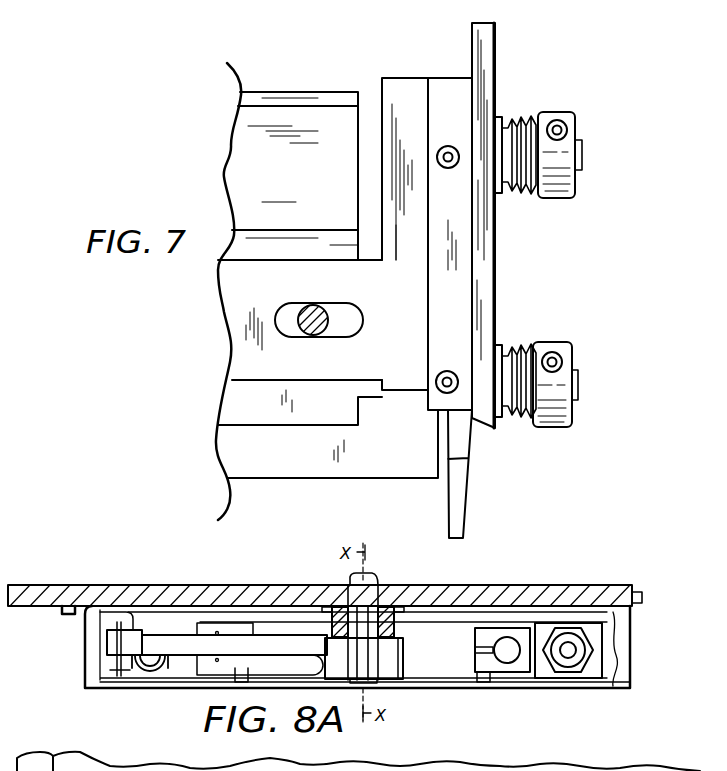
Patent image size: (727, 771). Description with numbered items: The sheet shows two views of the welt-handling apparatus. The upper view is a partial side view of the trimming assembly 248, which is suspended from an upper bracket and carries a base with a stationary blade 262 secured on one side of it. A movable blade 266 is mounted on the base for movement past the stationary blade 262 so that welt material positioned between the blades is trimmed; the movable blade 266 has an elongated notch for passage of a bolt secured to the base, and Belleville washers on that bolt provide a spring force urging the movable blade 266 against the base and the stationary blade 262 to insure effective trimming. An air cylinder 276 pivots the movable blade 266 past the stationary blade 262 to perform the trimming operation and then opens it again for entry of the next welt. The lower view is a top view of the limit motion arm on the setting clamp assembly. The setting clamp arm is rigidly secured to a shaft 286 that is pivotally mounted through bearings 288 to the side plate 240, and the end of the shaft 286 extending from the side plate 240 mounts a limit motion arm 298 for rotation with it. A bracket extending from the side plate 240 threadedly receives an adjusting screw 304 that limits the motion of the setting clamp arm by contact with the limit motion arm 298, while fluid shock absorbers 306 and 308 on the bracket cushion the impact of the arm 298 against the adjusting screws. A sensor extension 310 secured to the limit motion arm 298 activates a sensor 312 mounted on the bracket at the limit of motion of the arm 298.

In FIG. 7, the trimming assembly 248 is at (394, 70).
In FIG. 7, the stationary blade 262 is at (461, 491).
In FIG. 7, the movable blade 266 is at (497, 277).
In FIG. 7, the air cylinder 276 is at (318, 181).
In FIG. 8A, the side plate 240 is at (80, 593).
In FIG. 8A, the shaft 286 is at (392, 606).
In FIG. 8A, the bearing 288 is at (327, 606).
In FIG. 8A, the limit motion arm 298 is at (192, 648).
In FIG. 8A, the adjusting screw 304 is at (508, 660).
In FIG. 8A, the fluid shock absorber 306 is at (152, 665).
In FIG. 8A, the fluid shock absorber 308 is at (568, 657).
In FIG. 8A, the sensor extension 310 is at (113, 645).
In FIG. 8A, the sensor 312 is at (107, 660).